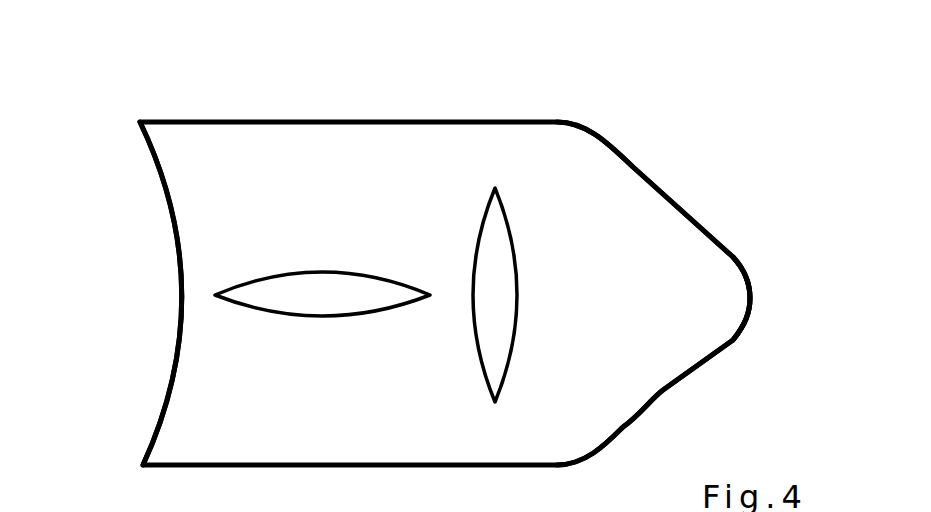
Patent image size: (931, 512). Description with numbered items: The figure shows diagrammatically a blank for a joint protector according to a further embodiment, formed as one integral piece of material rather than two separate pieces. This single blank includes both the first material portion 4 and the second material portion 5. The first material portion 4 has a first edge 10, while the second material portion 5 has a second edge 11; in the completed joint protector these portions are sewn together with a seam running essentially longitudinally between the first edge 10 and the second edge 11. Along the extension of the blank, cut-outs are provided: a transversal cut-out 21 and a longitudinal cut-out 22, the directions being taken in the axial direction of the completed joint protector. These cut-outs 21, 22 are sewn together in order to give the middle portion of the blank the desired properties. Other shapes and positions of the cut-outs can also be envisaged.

The first material portion 4 is at (212, 348).
The first edge 10 is at (167, 218).
The second material portion 5 is at (645, 255).
The second edge 11 is at (752, 293).
The transversal cut-out 21 is at (317, 295).
The longitudinal cut-out 22 is at (492, 275).